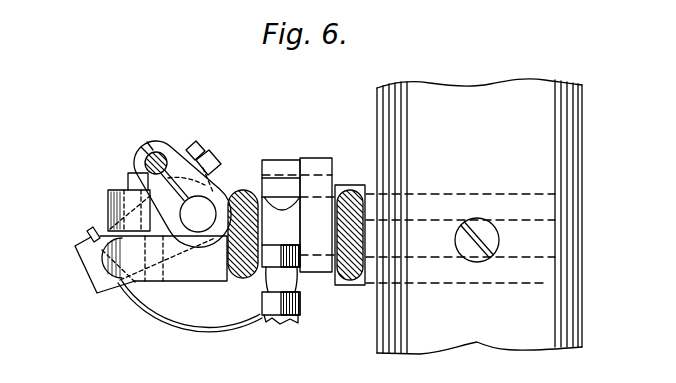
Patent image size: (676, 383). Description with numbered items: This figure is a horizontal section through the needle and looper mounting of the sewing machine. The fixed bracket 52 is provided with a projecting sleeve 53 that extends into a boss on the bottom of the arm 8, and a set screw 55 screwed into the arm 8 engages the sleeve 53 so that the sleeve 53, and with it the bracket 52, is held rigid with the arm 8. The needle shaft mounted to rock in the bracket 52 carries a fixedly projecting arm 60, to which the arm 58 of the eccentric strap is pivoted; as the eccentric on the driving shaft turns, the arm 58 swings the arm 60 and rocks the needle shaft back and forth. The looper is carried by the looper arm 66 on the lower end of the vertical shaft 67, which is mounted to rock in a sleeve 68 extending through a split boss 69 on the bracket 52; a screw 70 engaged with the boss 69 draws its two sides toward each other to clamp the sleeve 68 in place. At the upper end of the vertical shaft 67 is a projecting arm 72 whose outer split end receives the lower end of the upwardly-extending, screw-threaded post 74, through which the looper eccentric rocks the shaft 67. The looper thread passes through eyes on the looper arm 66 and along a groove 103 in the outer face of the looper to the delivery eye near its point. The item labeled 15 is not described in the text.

The arm 8 is at (463, 92).
The pin head 15 is at (197, 148).
The bracket 52 is at (250, 192).
The sleeve 53 is at (548, 279).
The set screw 55 is at (480, 218).
The arm 58 is at (283, 160).
The arm 60 is at (318, 158).
The looper arm 66 is at (99, 292).
The vertical shaft 67 is at (199, 216).
The sleeve 68 is at (216, 190).
The split boss 69 is at (115, 208).
The screw 70 is at (129, 182).
The projecting arm 72 is at (140, 166).
The screw-threaded post 74 is at (161, 155).
The groove 103 is at (200, 334).